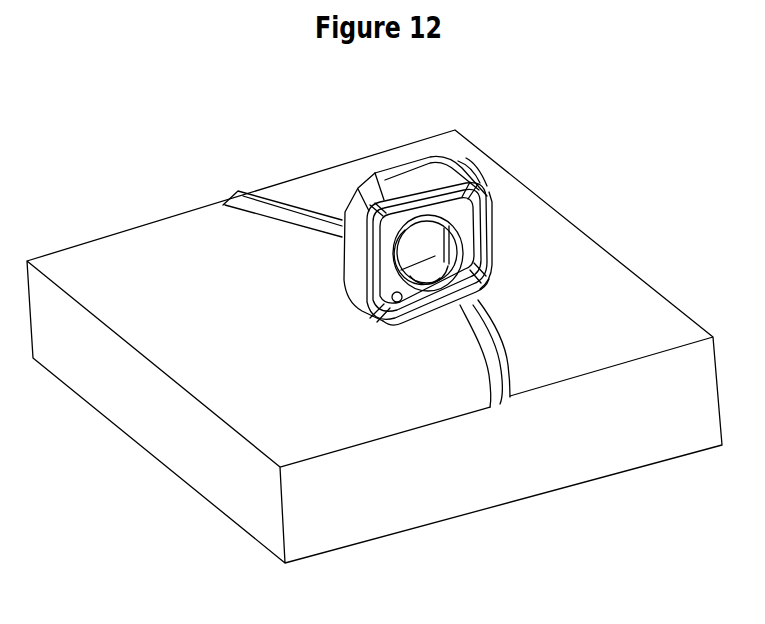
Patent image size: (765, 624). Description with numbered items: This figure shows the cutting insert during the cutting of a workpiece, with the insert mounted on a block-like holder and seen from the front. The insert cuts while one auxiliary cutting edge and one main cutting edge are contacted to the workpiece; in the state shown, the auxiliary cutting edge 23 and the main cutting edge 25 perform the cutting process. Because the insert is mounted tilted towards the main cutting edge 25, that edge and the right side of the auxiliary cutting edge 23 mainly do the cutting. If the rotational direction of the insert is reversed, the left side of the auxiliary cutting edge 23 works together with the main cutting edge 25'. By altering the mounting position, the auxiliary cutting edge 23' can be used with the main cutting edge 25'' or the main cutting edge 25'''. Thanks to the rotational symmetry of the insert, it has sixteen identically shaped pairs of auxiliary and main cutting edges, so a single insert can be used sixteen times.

The auxiliary cutting edge 23 is at (427, 296).
The auxiliary cutting edge 23' is at (478, 238).
The main cutting edge 25 is at (519, 353).
The main cutting edge 25' is at (398, 344).
The main cutting edge 25'' is at (546, 241).
The main cutting edge 25''' is at (512, 140).